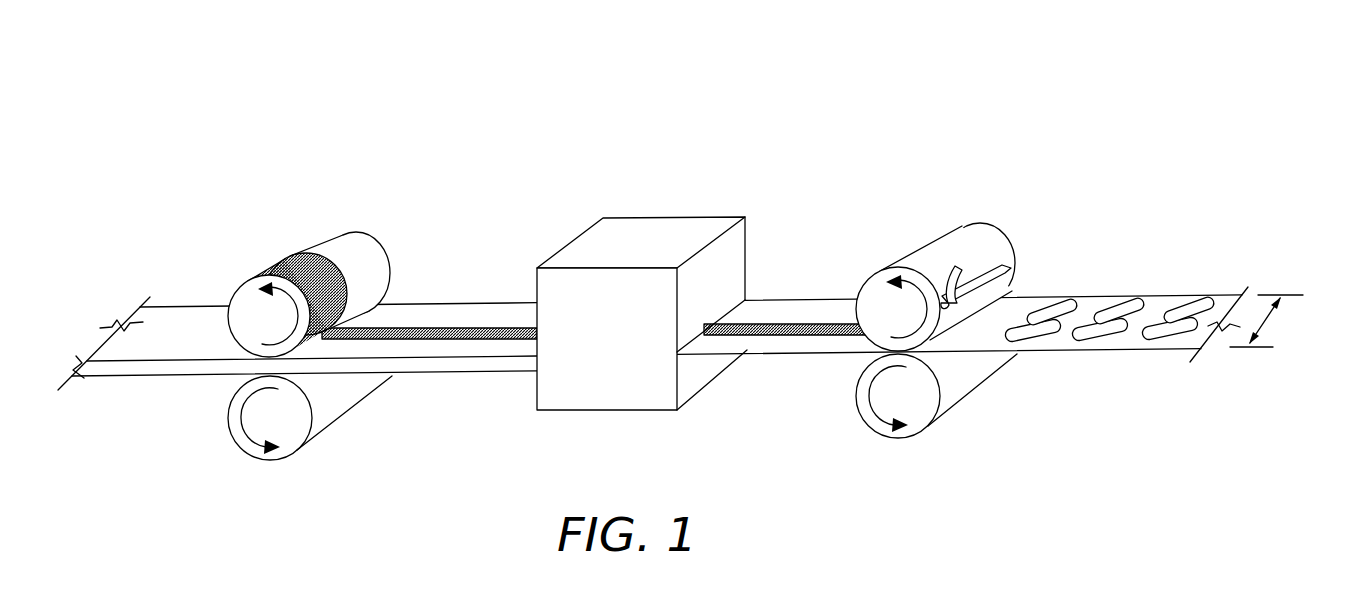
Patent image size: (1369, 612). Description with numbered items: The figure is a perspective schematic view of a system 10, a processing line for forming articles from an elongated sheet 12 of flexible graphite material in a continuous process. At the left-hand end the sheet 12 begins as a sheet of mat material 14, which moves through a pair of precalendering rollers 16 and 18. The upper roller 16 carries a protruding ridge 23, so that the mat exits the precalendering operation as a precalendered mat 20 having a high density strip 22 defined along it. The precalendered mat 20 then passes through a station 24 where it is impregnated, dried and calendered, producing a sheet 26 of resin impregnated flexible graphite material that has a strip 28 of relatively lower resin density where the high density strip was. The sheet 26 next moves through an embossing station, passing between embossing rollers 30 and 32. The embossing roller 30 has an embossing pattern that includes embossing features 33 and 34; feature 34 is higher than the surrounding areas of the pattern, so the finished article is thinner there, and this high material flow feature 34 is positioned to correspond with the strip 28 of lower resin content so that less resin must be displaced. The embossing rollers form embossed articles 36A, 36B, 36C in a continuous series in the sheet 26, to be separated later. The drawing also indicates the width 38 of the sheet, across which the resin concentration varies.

The system 10 is at (243, 172).
The sheet 12 is at (653, 287).
The mat material 14 is at (164, 316).
The precalendering roller 16 is at (361, 257).
The precalendering roller 18 is at (325, 420).
The precalendered mat 20 is at (415, 350).
The high density strip 22 is at (442, 328).
The protruding ridge 23 is at (322, 250).
The station 24 is at (642, 398).
The sheet of resin impregnated flexible graphite material 26 is at (766, 300).
The strip of relatively lower resin density 28 is at (810, 324).
The embossing roller 30 is at (985, 252).
The embossing roller 32 is at (967, 377).
The embossing feature 33 is at (1007, 273).
The embossing feature 34 is at (962, 267).
The embossed article 36A is at (1152, 340).
The embossed article 36B is at (1090, 340).
The embossed article 36C is at (1022, 342).
The width 38 is at (1270, 320).